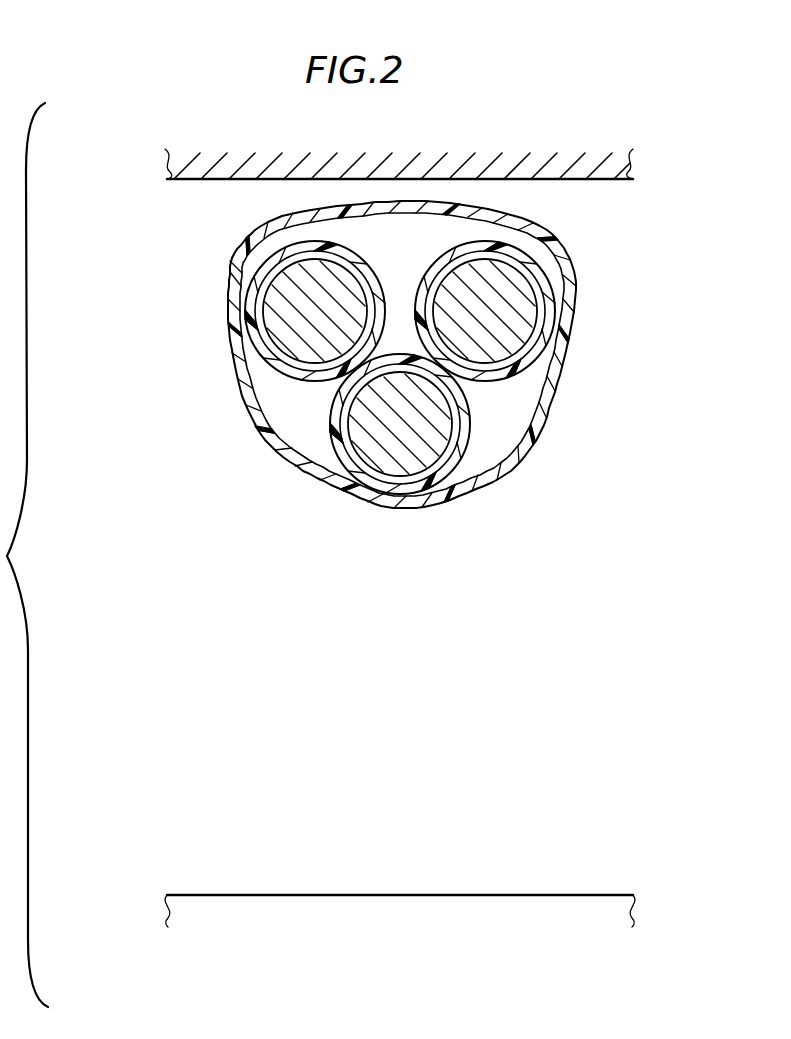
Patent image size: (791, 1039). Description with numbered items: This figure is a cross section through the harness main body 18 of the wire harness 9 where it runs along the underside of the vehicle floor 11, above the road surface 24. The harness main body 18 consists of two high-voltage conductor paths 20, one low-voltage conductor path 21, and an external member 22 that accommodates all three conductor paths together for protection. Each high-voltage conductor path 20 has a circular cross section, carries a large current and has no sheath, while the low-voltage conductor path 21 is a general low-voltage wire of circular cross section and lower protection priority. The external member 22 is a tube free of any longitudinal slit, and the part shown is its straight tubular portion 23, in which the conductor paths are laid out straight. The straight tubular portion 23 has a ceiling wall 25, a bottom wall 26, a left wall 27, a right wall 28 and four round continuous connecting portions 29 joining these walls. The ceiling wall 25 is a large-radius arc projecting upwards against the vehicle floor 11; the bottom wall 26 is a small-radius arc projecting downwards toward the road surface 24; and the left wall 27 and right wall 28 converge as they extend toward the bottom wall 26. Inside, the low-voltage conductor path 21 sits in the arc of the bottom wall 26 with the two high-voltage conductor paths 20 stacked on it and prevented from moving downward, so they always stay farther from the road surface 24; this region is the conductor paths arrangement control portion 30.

The wire harness 9 is at (666, 224).
The harness main body 18 is at (619, 250).
The vehicle floor 11 is at (193, 181).
The high-voltage conductor path 20 is at (252, 298).
The low-voltage conductor path 21 is at (443, 480).
The external member 22 is at (259, 445).
The straight tubular portion 23 is at (596, 419).
The conductor paths arrangement control portion 30 is at (560, 402).
The road surface 24 is at (222, 895).
The ceiling wall 25 is at (468, 212).
The bottom wall 26 is at (340, 485).
The left wall 27 is at (248, 372).
The right wall 28 is at (557, 360).
The continuous connecting portion 29 is at (247, 256).